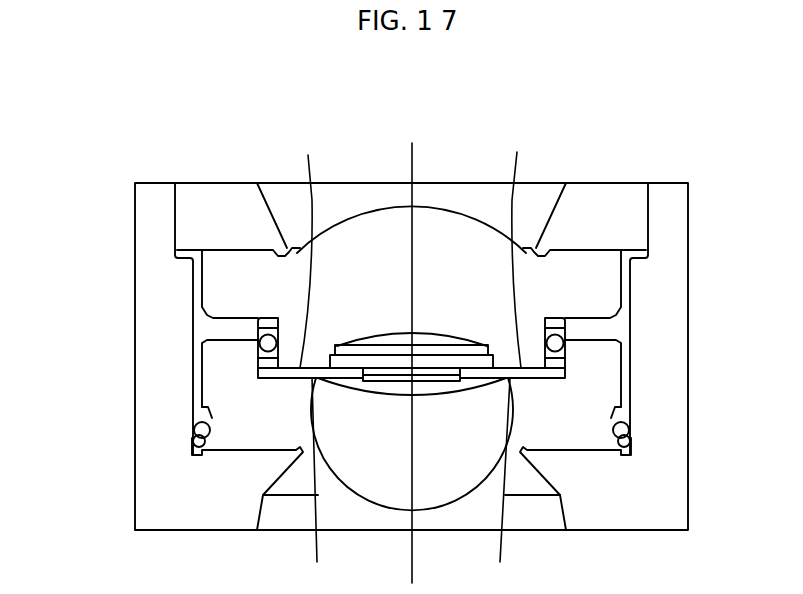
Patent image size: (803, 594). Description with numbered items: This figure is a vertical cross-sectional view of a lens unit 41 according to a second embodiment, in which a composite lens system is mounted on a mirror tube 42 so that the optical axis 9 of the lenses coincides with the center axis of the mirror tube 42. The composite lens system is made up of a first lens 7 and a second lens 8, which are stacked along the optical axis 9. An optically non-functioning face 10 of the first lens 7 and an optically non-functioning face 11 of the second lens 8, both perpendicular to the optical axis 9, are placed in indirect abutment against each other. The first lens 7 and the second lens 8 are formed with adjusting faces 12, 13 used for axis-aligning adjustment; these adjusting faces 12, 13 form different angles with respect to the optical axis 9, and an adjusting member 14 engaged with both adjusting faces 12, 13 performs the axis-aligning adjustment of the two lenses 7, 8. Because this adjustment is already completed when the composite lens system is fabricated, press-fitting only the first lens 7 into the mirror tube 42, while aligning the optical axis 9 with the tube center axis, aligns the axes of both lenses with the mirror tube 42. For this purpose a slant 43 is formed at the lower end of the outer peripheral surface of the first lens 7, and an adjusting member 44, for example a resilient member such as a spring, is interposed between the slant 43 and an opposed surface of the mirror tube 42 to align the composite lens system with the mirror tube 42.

The lens unit 41 is at (88, 110).
The mirror tube 42 is at (134, 232).
The slant 43 is at (195, 413).
The adjusting member 44 is at (193, 441).
The first lens 7 is at (364, 508).
The second lens 8 is at (380, 207).
The optical axis 9 is at (412, 143).
The optically non-functioning face 10 is at (405, 485).
The optically non-functioning face 11 is at (410, 245).
The adjusting face 12 is at (255, 357).
The adjusting face 13 is at (255, 327).
The adjusting member 14 is at (255, 343).